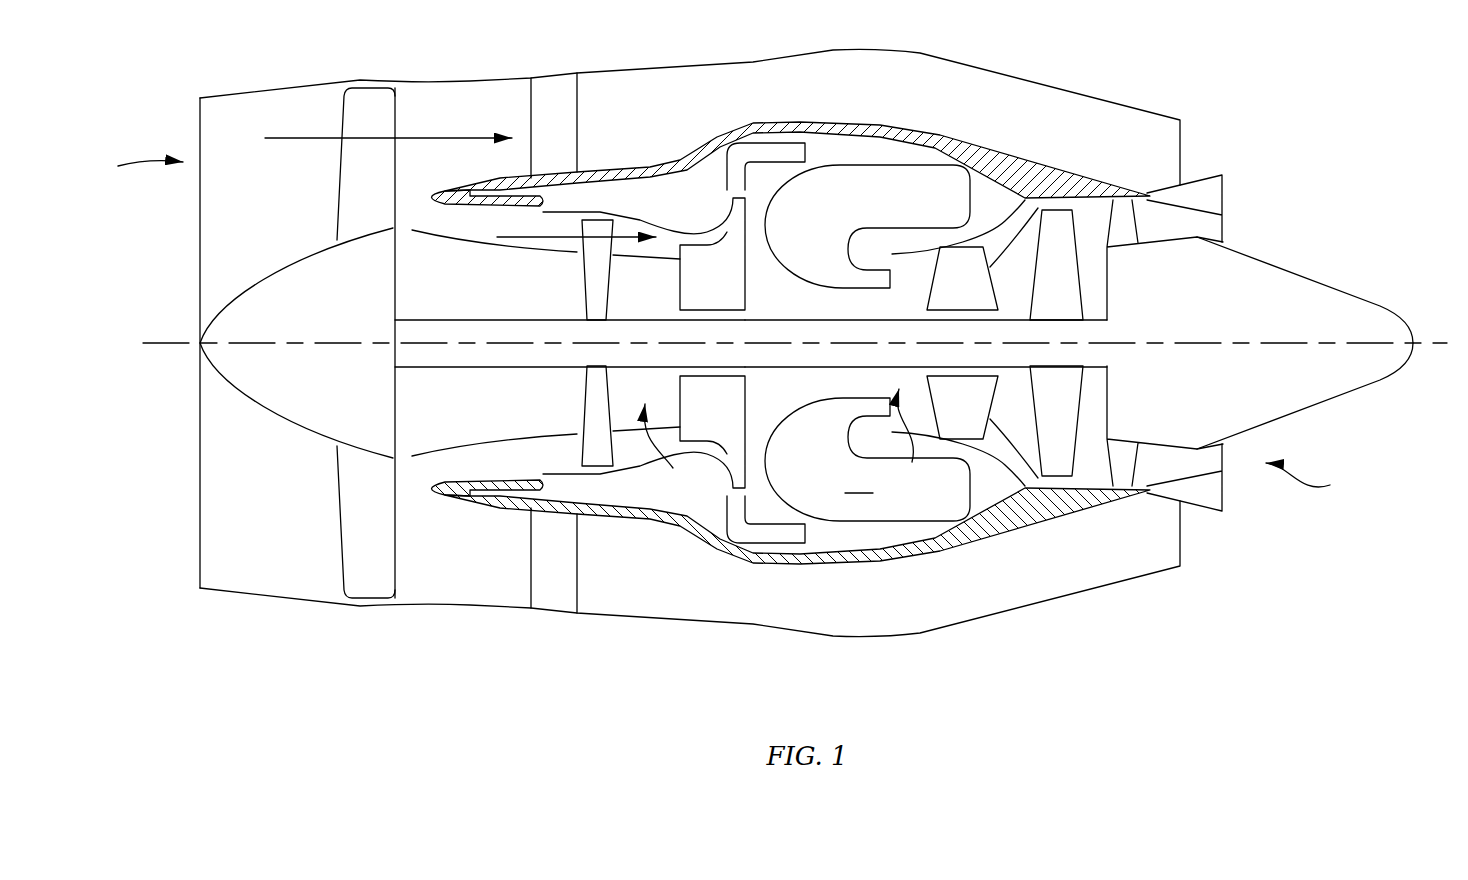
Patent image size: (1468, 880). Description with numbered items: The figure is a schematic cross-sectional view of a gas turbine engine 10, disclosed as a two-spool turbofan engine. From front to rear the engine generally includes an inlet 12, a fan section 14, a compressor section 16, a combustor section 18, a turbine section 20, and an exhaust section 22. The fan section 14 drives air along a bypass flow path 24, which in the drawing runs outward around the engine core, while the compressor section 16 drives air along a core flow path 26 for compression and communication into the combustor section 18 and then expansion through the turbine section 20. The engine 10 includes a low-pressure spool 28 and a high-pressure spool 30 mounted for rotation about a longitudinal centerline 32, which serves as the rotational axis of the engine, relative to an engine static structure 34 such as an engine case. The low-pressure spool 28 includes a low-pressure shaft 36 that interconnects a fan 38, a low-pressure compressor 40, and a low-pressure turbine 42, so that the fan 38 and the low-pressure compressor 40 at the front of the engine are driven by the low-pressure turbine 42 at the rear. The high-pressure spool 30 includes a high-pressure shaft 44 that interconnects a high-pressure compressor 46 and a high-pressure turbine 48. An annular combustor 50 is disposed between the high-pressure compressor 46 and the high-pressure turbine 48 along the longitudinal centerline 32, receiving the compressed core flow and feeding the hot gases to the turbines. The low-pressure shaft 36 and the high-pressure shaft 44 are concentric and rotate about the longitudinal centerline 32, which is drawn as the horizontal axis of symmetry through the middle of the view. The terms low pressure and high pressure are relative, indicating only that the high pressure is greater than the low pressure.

The gas turbine engine 10 is at (1234, 77).
The inlet 12 is at (133, 169).
The fan section 14 is at (311, 110).
The compressor section 16 is at (646, 110).
The combustor section 18 is at (886, 152).
The turbine section 20 is at (1064, 148).
The exhaust section 22 is at (1280, 343).
The bypass flow path 24 is at (440, 136).
The core flow path 26 is at (541, 240).
The low-pressure spool 28 is at (668, 453).
The high-pressure spool 30 is at (914, 442).
The longitudinal centerline 32 is at (1443, 345).
The engine static structure 34 is at (1065, 507).
The low-pressure shaft 36 is at (467, 356).
The fan 38 is at (358, 555).
The low-pressure compressor 40 is at (597, 433).
The low-pressure turbine 42 is at (1064, 263).
The high-pressure shaft 44 is at (767, 356).
The high-pressure compressor 46 is at (718, 272).
The high-pressure turbine 48 is at (962, 275).
The annular combustor 50 is at (858, 478).